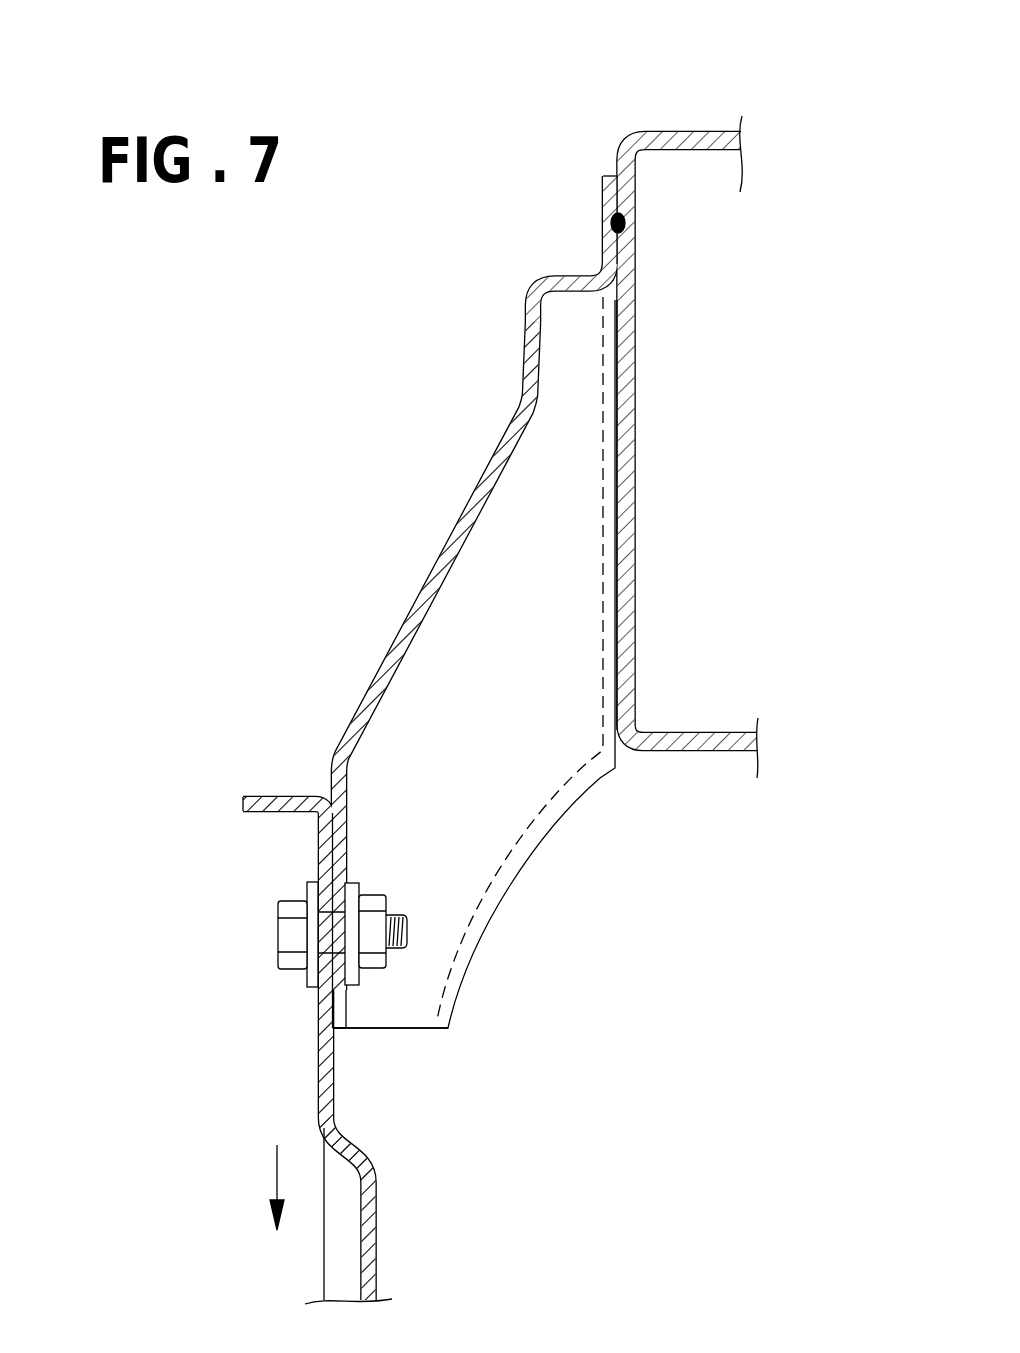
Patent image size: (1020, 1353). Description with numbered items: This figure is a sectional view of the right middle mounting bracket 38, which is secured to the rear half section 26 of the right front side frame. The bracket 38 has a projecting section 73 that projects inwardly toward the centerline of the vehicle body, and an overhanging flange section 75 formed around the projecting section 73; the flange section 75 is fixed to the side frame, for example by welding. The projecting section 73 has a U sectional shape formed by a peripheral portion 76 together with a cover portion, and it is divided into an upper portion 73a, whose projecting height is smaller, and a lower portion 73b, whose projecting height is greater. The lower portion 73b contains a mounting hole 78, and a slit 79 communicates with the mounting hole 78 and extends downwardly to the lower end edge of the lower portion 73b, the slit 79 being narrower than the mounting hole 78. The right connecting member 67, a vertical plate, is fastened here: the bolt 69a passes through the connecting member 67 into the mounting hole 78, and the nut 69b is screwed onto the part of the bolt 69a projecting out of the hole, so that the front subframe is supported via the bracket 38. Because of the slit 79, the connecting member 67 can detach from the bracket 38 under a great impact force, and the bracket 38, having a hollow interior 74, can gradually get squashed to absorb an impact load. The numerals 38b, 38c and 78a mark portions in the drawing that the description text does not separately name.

The rear half section 26 is at (684, 131).
The right middle mounting bracket 38 is at (463, 503).
The lower leg portion 38b is at (320, 990).
The bent portion 38c is at (321, 1056).
The right connecting member 67 is at (326, 1274).
The bolt 69a is at (293, 933).
The nut 69b is at (384, 958).
The projecting section 73 is at (408, 620).
The upper portion 73a is at (525, 352).
The lower portion 73b is at (318, 826).
The hollow interior 74 is at (518, 672).
The flange section 75 is at (603, 200).
The peripheral portion 76 is at (556, 281).
The mounting hole 78 is at (370, 897).
The threaded end 78a is at (407, 925).
The slit 79 is at (343, 1008).